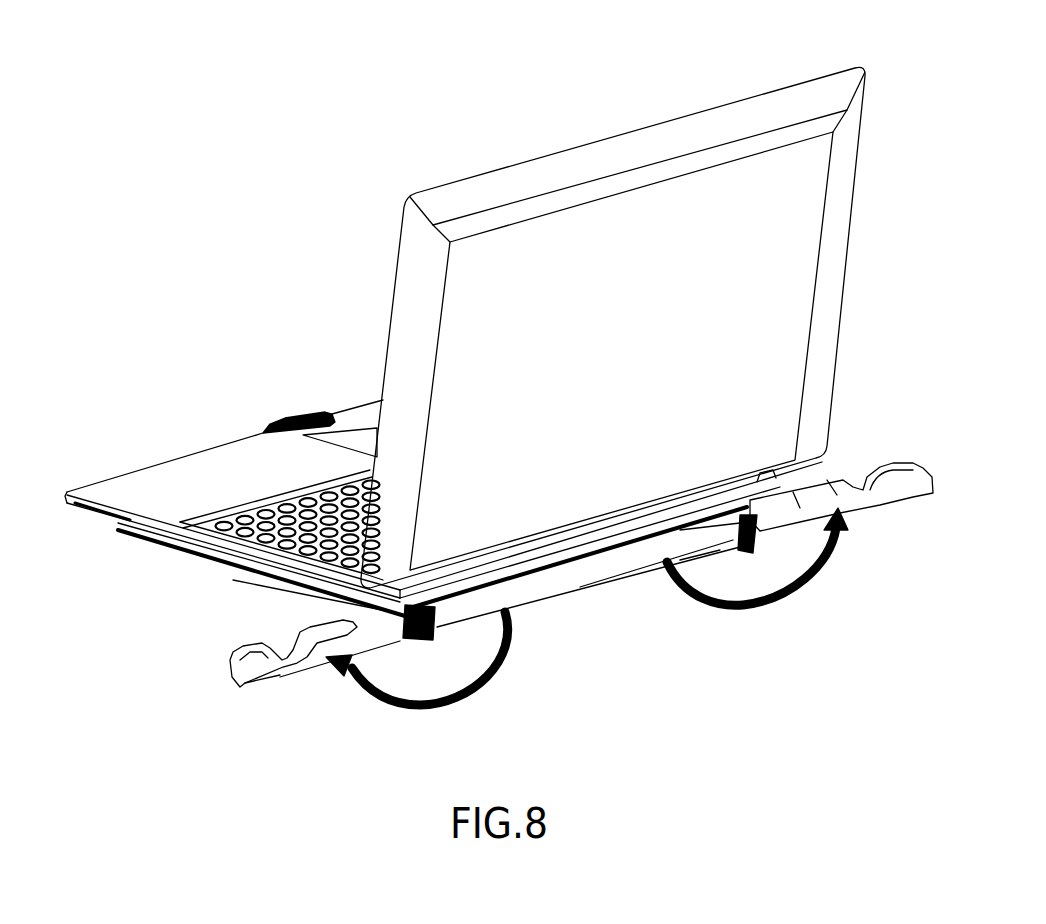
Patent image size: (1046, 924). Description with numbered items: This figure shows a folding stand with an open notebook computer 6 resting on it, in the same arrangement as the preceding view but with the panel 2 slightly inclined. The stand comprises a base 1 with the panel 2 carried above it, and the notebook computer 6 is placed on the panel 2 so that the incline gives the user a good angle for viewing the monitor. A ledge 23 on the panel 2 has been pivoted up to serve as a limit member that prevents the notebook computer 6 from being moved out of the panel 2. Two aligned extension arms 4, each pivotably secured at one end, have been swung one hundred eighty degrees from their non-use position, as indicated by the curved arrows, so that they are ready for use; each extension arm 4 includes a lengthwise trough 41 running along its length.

The base 1 is at (202, 557).
The panel 2 is at (608, 540).
The extension arm 4 is at (900, 497).
The lengthwise trough 41 is at (900, 465).
The notebook computer 6 is at (202, 463).
The ledge 23 is at (292, 420).